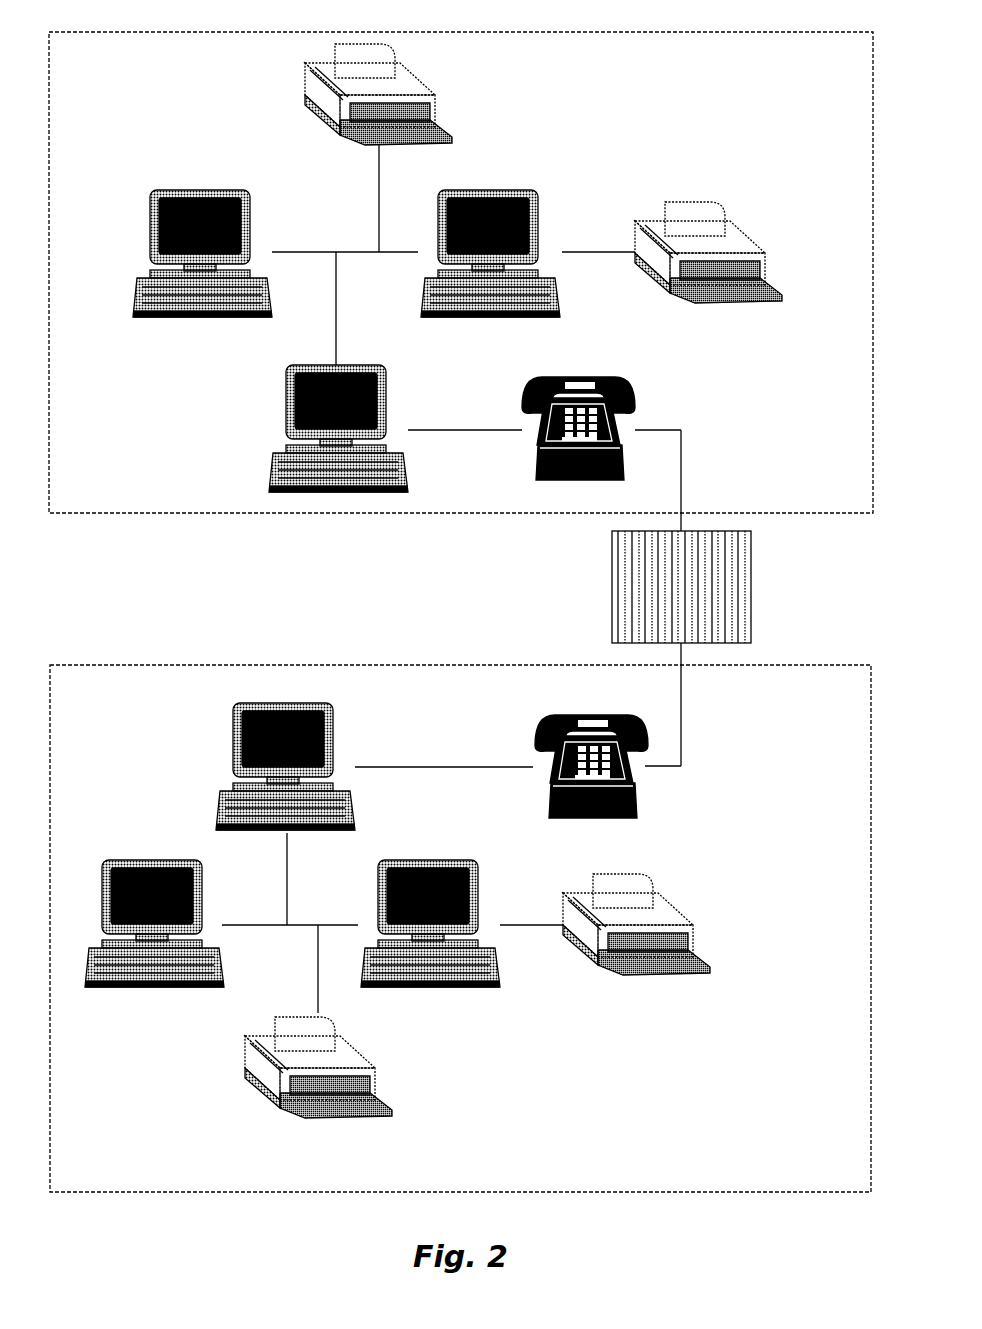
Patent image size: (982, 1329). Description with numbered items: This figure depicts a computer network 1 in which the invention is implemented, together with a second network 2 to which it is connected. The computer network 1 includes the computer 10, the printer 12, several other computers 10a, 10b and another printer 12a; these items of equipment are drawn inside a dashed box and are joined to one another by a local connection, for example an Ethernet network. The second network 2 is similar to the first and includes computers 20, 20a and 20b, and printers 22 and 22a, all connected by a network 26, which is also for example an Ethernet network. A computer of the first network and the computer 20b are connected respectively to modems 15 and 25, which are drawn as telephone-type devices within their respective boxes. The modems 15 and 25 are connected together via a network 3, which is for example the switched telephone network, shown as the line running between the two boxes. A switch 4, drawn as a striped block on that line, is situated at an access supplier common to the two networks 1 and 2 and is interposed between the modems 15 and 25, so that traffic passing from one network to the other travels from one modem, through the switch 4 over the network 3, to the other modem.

The computer network 1 is at (455, 515).
The second network 2 is at (458, 664).
The network 3 is at (681, 766).
The switch 4 is at (748, 620).
The computer 10 is at (131, 255).
The computer 10a is at (490, 190).
The computer 10b is at (265, 430).
The printer 12 is at (450, 96).
The printer 12a is at (750, 243).
The modem 15 is at (580, 375).
The computer 20 is at (150, 860).
The computer 20a is at (430, 860).
The computer 20b is at (215, 770).
The printer 22 is at (320, 1120).
The printer 22a is at (637, 975).
The modem 25 is at (612, 718).
The network 26 is at (290, 925).